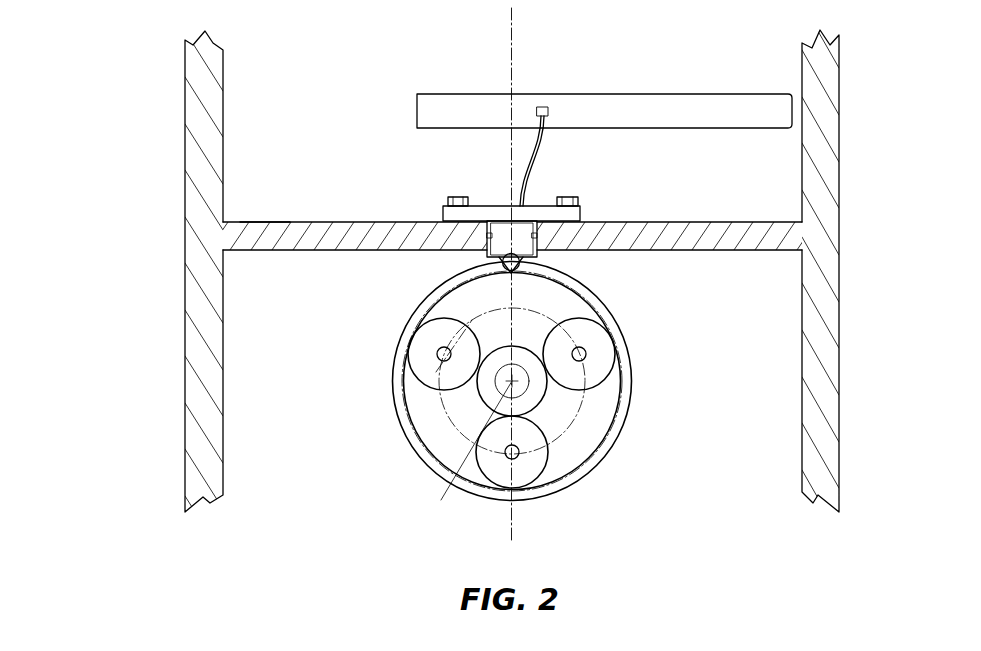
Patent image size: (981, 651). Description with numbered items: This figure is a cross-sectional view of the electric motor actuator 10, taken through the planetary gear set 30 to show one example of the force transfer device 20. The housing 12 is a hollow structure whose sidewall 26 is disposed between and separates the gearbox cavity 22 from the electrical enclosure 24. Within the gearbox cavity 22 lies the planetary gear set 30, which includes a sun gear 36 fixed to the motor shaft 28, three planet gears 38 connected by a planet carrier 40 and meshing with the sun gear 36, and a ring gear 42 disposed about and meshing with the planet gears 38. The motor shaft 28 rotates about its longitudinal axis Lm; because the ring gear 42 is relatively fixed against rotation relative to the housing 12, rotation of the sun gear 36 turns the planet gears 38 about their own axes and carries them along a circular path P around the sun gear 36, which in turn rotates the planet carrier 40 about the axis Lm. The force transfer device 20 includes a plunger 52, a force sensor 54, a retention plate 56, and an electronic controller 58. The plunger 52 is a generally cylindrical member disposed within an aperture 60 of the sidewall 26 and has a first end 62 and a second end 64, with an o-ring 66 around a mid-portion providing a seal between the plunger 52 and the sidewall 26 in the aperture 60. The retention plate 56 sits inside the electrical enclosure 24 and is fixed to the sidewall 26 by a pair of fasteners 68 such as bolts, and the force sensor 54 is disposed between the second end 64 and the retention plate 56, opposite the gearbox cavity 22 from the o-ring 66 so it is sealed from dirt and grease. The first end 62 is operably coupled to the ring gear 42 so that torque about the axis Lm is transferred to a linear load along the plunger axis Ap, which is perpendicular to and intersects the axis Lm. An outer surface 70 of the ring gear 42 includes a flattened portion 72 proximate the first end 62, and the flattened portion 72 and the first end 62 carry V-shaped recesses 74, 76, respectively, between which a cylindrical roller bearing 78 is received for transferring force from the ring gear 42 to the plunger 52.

The electric motor actuator 10 is at (112, 113).
The housing 12 is at (183, 235).
The force transfer device 20 is at (520, 226).
The gearbox cavity 22 is at (255, 395).
The electrical enclosure 24 is at (251, 105).
The sidewall 26 is at (262, 220).
The motor shaft 28 is at (512, 430).
The planetary gear set 30 is at (495, 407).
The sun gear 36 is at (538, 394).
The planet gears 38 is at (512, 431).
The planet carrier 40 is at (443, 355).
The ring gear 42 is at (432, 468).
The plunger 52 is at (487, 240).
The force sensor 54 is at (505, 221).
The retention plate 56 is at (523, 213).
The electronic controller 58 is at (705, 94).
The aperture 60 is at (545, 233).
The first end 62 is at (538, 256).
The second end 64 is at (532, 217).
The o-ring 66 is at (487, 236).
The fasteners 68 is at (458, 197).
The outer surface 70 is at (420, 298).
The flattened portion 72 is at (488, 256).
The V-shaped recess 74 is at (499, 277).
The V-shaped recess 76 is at (527, 257).
The bearing 78 is at (528, 270).
The circular path P is at (447, 421).
The longitudinal axis of the motor shaft Lm is at (470, 452).
The plunger axis Ap is at (513, 40).